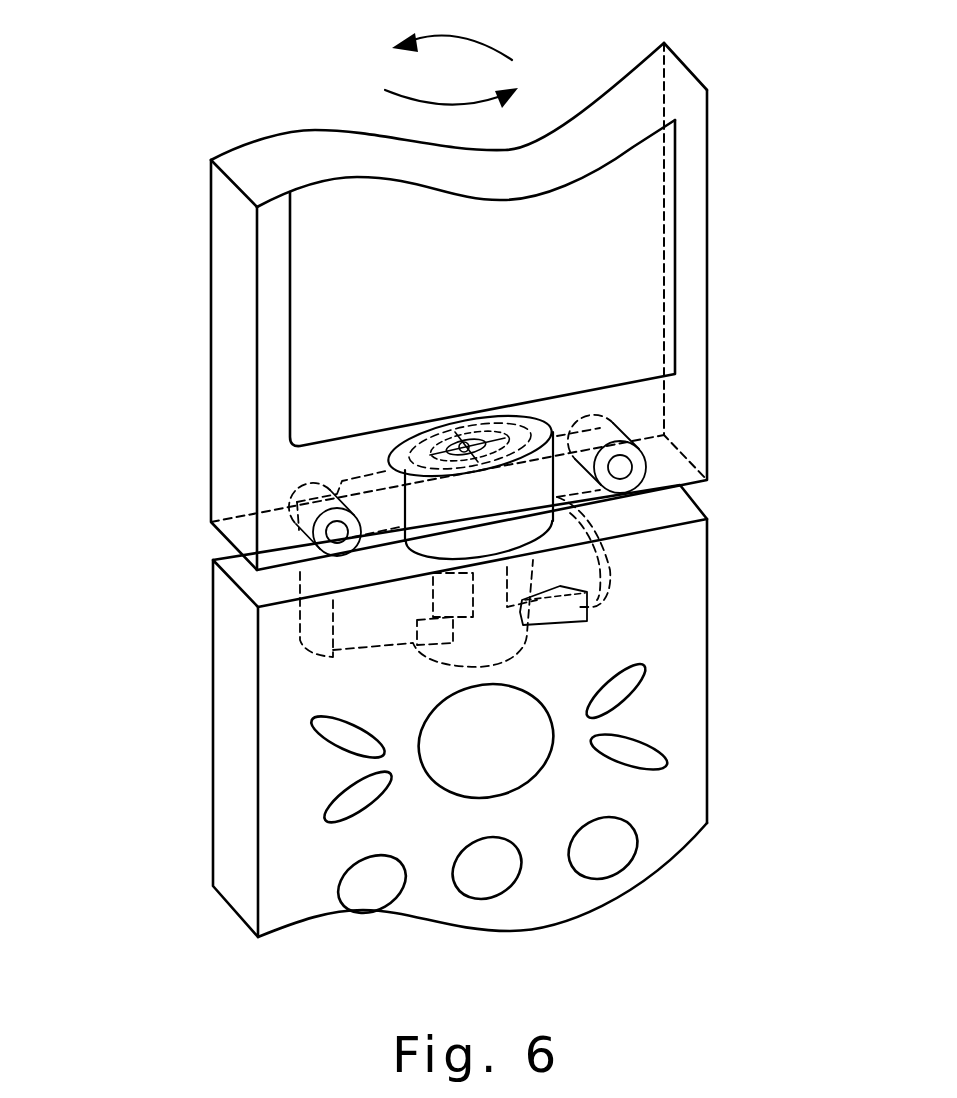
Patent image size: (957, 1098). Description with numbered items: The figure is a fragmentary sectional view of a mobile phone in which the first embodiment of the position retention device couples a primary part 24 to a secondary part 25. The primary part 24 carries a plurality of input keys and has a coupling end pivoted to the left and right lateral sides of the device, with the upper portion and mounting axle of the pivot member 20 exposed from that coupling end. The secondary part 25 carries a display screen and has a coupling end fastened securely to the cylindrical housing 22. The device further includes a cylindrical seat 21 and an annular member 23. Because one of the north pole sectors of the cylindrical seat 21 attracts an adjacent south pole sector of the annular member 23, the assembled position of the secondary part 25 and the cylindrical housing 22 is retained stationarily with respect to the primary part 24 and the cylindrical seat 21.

The pivot member 20 is at (683, 489).
The cylindrical seat 21 is at (510, 433).
The cylindrical housing 22 is at (427, 521).
The annular member 23 is at (473, 440).
The primary part 24 is at (680, 827).
The secondary part 25 is at (697, 220).